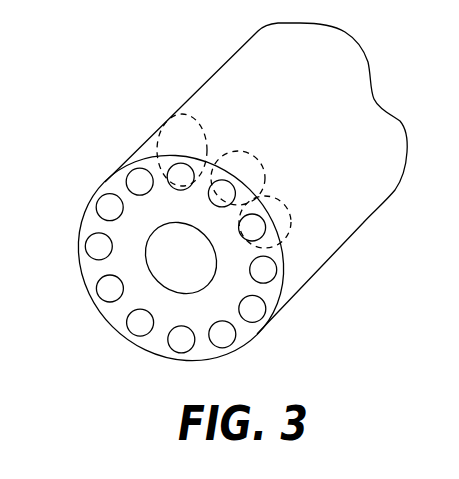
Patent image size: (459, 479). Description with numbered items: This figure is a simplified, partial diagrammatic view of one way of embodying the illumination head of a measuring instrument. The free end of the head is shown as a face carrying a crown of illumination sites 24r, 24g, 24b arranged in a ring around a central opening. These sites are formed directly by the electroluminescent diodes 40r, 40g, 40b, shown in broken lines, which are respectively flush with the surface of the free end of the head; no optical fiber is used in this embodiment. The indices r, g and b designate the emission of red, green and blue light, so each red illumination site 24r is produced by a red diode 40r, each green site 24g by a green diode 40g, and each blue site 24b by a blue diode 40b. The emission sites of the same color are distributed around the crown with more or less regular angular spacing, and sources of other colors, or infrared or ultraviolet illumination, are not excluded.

The illumination site 24r is at (176, 172).
The illumination site 24b is at (138, 178).
The illumination site 24g is at (135, 332).
The electroluminescent diode 40r is at (207, 112).
The electroluminescent diode 40g is at (257, 137).
The electroluminescent diode 40b is at (288, 183).